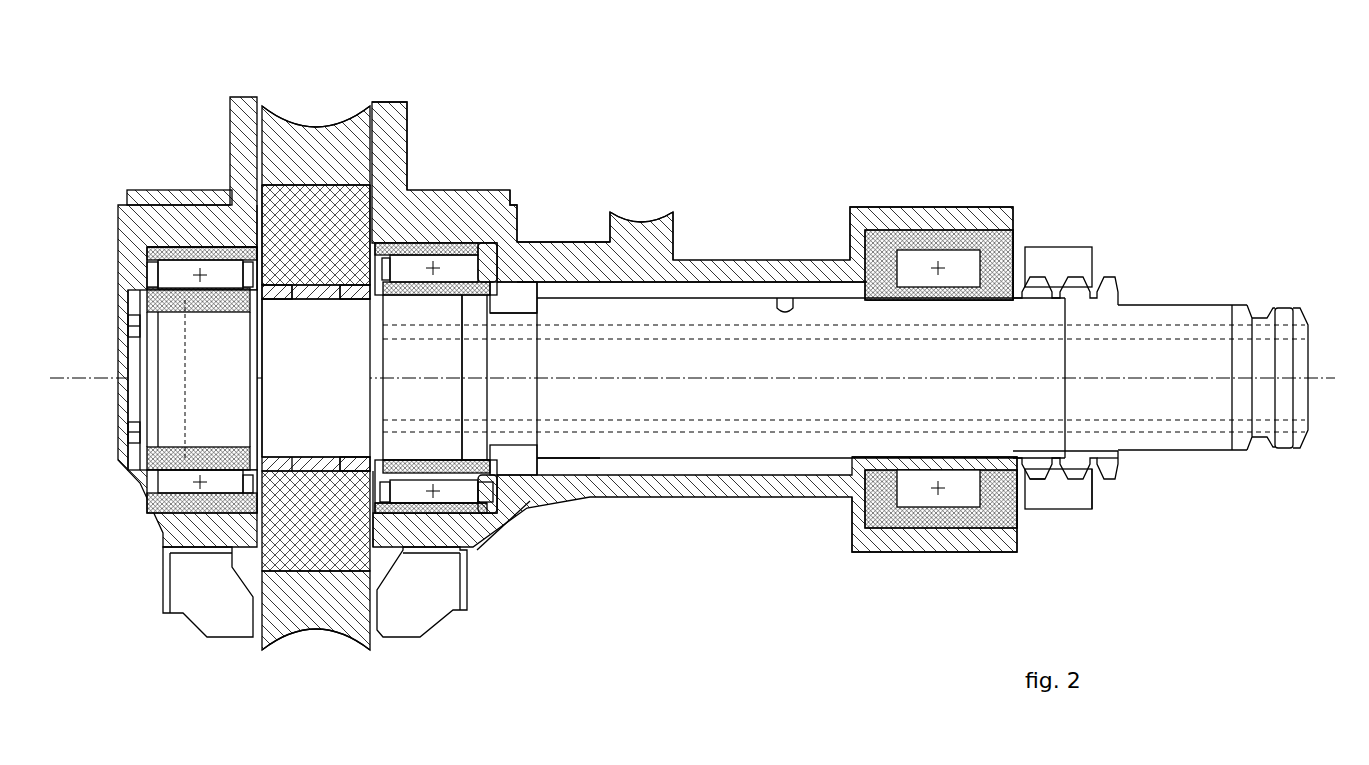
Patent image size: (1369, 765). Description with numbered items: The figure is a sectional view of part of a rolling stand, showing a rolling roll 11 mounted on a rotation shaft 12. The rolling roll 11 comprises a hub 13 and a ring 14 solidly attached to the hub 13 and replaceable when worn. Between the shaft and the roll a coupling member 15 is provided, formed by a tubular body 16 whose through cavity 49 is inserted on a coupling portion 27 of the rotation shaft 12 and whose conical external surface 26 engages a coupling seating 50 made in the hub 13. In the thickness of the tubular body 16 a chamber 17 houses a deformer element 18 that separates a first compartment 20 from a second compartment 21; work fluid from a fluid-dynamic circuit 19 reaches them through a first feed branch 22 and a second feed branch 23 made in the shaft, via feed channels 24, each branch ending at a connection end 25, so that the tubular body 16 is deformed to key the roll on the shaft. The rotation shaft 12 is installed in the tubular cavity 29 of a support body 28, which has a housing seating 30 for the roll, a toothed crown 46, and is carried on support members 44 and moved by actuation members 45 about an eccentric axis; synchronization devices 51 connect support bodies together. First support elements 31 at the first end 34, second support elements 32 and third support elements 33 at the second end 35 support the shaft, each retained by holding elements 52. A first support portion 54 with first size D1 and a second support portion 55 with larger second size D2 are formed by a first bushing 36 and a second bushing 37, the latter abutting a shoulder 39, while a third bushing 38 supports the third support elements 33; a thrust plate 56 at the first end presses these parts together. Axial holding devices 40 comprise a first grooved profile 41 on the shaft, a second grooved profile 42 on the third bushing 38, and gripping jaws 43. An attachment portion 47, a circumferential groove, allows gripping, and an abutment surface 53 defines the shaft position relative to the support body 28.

The rolling roll 11 is at (320, 122).
The rotation shaft 12 is at (703, 290).
The hub 13 is at (258, 222).
The ring 14 is at (348, 130).
The coupling member 15 is at (251, 232).
The tubular body 16 is at (177, 250).
The chamber 17 is at (272, 300).
The deformer element 18 is at (336, 300).
The fluid-dynamic circuit 19 is at (1165, 322).
The first compartment 20 is at (400, 467).
The second compartment 21 is at (290, 460).
The first feed branch 22 is at (873, 340).
The second feed branch 23 is at (810, 420).
The feed channels 24 is at (183, 432).
The connection end 25 is at (1308, 330).
The external surface 26 is at (307, 300).
The coupling portion 27 is at (295, 283).
The support body 28 is at (563, 235).
The tubular cavity 29 is at (773, 290).
The housing seating 30 is at (375, 168).
The first support elements 31 is at (163, 198).
The second support elements 32 is at (518, 205).
The third support elements 33 is at (983, 270).
The first end 34 is at (173, 352).
The second end 35 is at (1298, 320).
The first bushing 36 is at (173, 300).
The second bushing 37 is at (418, 292).
The third bushing 38 is at (1003, 277).
The shoulder 39 is at (490, 313).
The axial holding devices 40 is at (1100, 493).
The first grooved profile 41 is at (1100, 462).
The second grooved profile 42 is at (1043, 470).
The gripping jaws 43 is at (1070, 262).
The support members 44 is at (135, 200).
The actuation members 45 is at (653, 210).
The toothed crown 46 is at (617, 222).
The attachment portion 47 is at (1262, 320).
The through cavity 49 is at (345, 447).
The coupling seating 50 is at (397, 547).
The synchronization devices 51 is at (507, 527).
The holding elements 52 is at (150, 253).
The abutment surface 53 is at (538, 468).
The first support portion 54 is at (150, 480).
The second support portion 55 is at (447, 487).
The thrust plate 56 is at (150, 407).
The first size D1 is at (120, 447).
The second size D2 is at (462, 402).